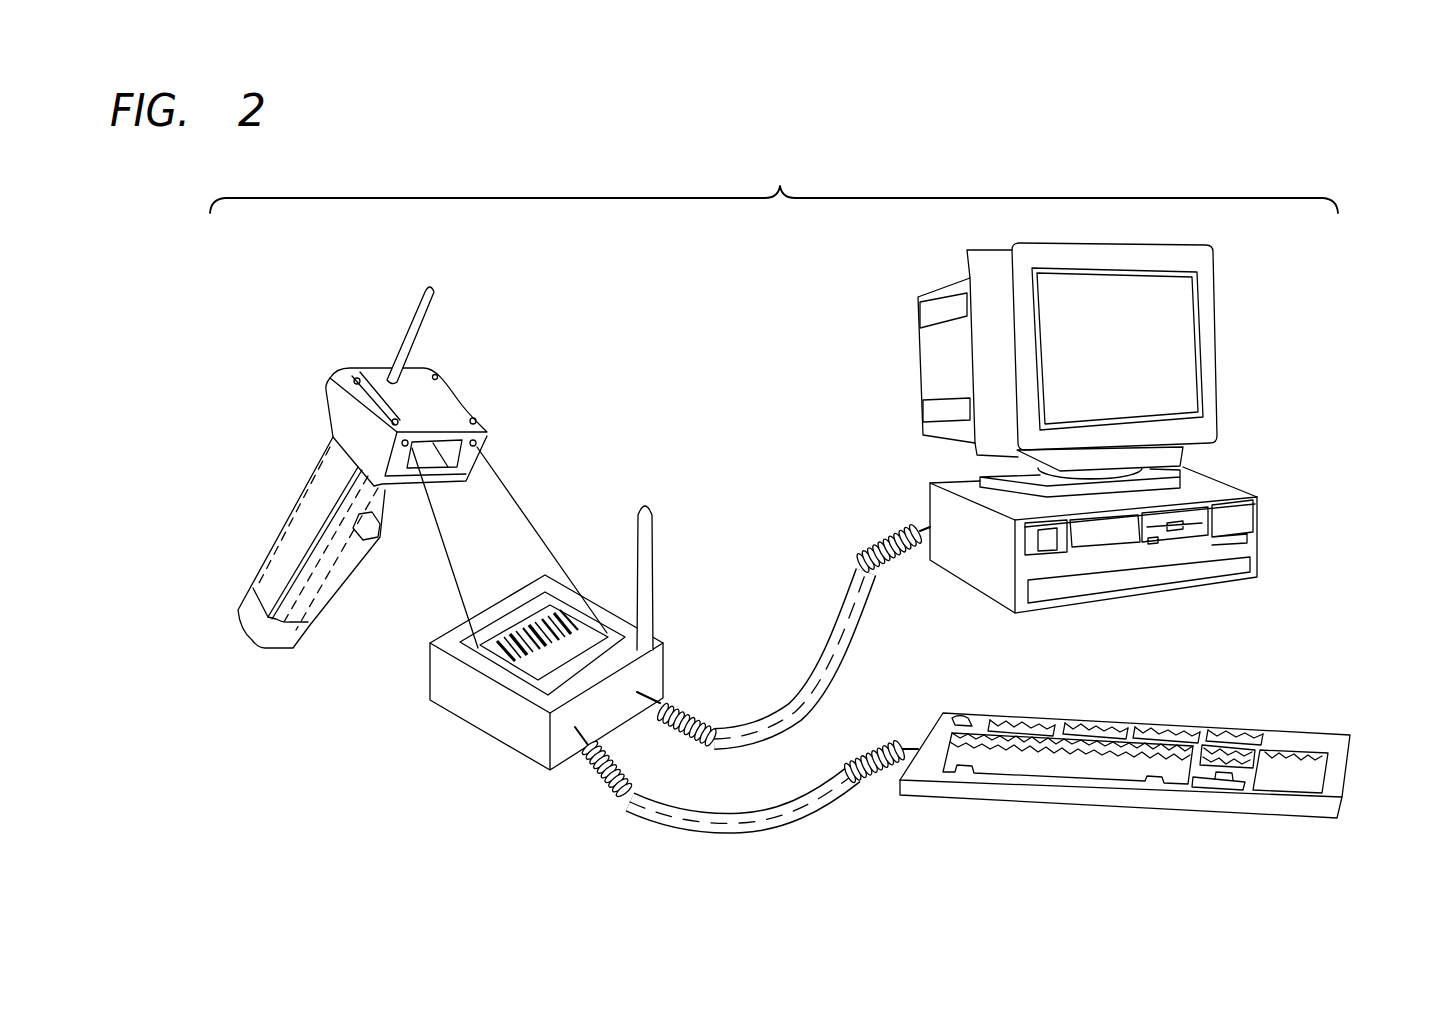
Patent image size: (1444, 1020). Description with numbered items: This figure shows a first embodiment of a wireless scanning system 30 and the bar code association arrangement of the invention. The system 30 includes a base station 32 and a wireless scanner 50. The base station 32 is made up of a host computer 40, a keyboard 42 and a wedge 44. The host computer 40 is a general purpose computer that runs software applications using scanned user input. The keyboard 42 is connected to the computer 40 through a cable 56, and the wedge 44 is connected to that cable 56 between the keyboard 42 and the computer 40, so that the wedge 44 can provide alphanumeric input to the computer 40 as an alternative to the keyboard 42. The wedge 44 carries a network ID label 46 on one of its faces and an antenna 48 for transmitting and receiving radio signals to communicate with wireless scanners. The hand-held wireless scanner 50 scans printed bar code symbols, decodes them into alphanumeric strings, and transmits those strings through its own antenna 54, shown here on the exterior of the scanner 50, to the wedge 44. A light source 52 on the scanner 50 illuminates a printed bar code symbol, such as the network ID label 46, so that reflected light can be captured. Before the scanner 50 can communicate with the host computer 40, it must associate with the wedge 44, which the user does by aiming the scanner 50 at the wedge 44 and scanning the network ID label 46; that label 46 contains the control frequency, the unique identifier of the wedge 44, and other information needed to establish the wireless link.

The wireless scanning system 30 is at (761, 167).
The base station 32 is at (405, 748).
The host computer 40 is at (1282, 462).
The keyboard 42 is at (1350, 766).
The wedge 44 is at (477, 730).
The network ID label 46 is at (523, 648).
The antenna 48 is at (655, 556).
The wireless scanner 50 is at (327, 386).
The light source 52 is at (470, 420).
The antenna 54 is at (411, 318).
The cable 56 is at (846, 588).